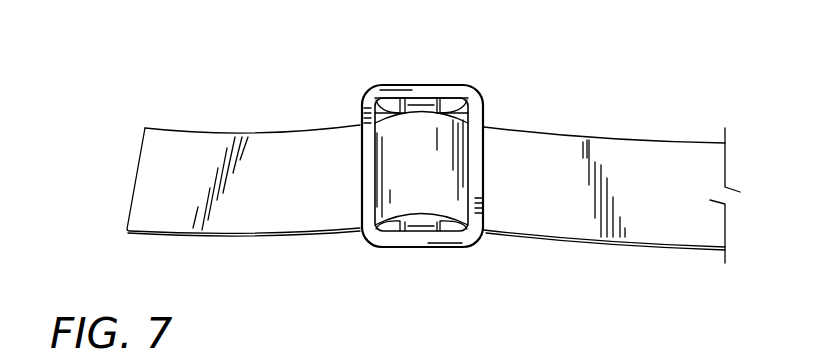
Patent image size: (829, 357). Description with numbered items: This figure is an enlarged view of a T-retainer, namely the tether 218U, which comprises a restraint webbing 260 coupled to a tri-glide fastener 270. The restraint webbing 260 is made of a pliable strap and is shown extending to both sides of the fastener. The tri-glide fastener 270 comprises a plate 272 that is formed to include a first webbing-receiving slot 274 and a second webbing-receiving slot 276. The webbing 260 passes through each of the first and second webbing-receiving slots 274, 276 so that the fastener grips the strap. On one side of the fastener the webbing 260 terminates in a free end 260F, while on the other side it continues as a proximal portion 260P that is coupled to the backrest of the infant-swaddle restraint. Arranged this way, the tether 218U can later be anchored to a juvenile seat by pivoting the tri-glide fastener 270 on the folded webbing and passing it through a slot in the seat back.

The restraint webbing 260 is at (130, 175).
The free end 260F is at (153, 198).
The proximal portion 260P is at (678, 173).
The tether 218U is at (380, 257).
The tri-glide fastener 270 is at (453, 90).
The plate 272 is at (410, 97).
The first webbing-receiving slot 274 is at (462, 110).
The second webbing-receiving slot 276 is at (383, 110).